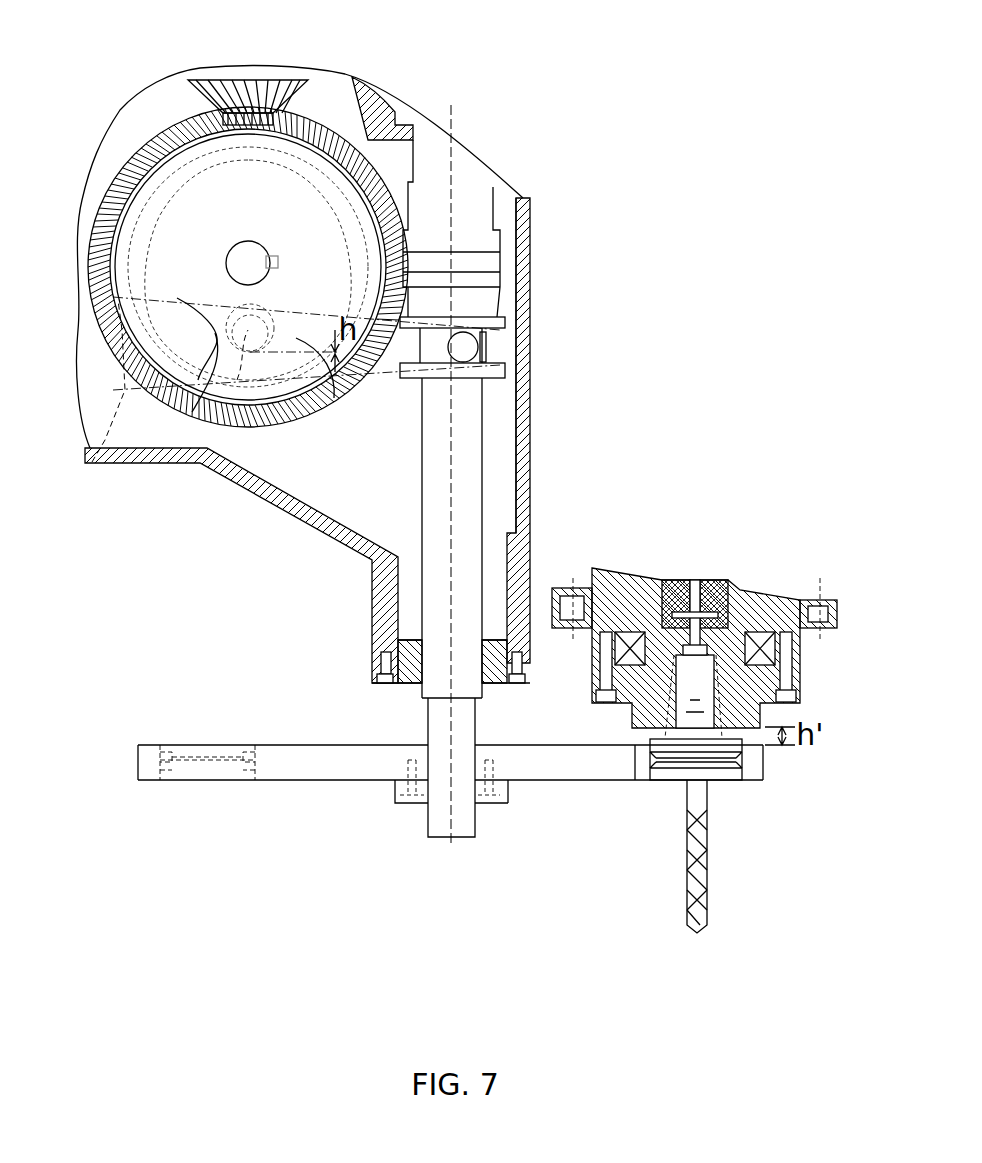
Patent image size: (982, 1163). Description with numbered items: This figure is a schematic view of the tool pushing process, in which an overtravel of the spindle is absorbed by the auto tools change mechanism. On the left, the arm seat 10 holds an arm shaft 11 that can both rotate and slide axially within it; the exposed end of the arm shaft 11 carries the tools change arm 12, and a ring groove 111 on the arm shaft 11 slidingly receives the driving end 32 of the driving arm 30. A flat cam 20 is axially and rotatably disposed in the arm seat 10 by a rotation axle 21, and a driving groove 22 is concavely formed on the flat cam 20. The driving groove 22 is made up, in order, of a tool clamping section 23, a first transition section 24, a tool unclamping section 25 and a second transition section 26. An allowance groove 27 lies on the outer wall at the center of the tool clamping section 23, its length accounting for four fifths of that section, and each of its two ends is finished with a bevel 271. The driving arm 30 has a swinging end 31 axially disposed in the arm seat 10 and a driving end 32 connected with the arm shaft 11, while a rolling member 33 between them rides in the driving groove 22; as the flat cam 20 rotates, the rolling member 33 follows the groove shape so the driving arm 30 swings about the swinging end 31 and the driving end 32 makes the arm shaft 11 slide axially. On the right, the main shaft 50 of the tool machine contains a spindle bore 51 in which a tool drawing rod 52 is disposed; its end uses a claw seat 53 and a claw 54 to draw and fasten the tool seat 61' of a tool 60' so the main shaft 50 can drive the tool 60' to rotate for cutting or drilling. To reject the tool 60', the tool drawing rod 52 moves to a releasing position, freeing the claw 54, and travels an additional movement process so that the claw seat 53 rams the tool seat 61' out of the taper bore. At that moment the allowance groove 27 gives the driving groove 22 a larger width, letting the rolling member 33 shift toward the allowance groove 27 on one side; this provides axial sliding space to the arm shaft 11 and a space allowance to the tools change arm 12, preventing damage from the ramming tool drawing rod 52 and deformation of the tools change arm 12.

The arm seat 10 is at (140, 100).
The arm shaft 11 is at (472, 190).
The ring groove 111 is at (495, 352).
The tools change arm 12 is at (328, 765).
The flat cam 20 is at (118, 238).
The rotation axle 21 is at (247, 250).
The driving groove 22 is at (216, 140).
The tool clamping section 23 is at (215, 340).
The first transition section 24 is at (173, 263).
The tool unclamping section 25 is at (275, 145).
The second transition section 26 is at (327, 265).
The allowance groove 27 is at (250, 355).
The bevel 271 is at (300, 345).
The driving arm 30 is at (387, 410).
The swinging end 31 is at (92, 462).
The driving end 32 is at (490, 347).
The rolling member 33 is at (237, 380).
The main shaft 50 is at (650, 578).
The spindle bore 51 is at (745, 580).
The tool drawing rod 52 is at (694, 573).
The claw seat 53 is at (722, 578).
The claw 54 is at (678, 578).
The tool 60' is at (656, 823).
The tool seat 61' is at (724, 778).